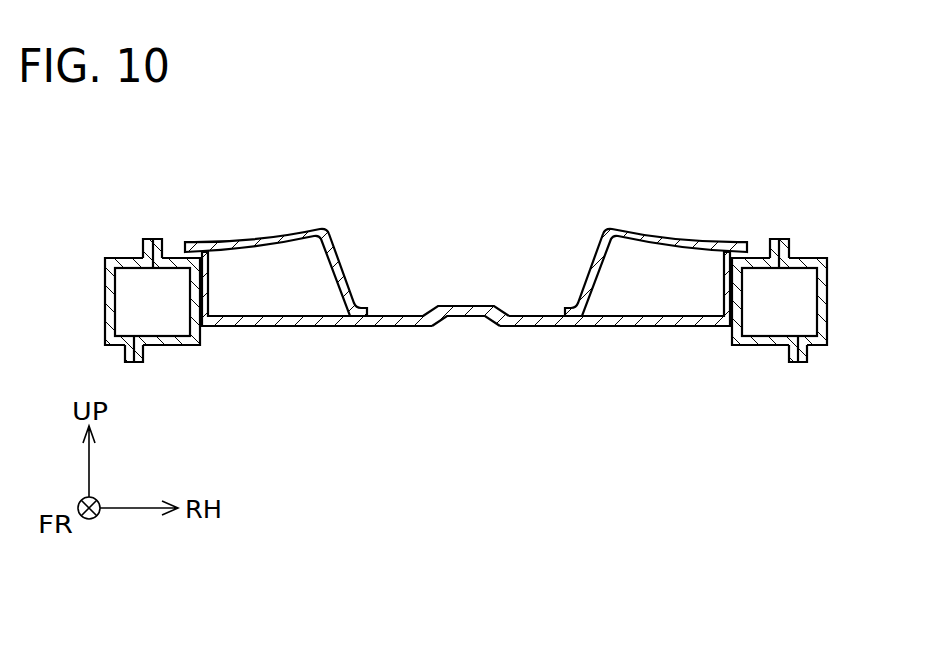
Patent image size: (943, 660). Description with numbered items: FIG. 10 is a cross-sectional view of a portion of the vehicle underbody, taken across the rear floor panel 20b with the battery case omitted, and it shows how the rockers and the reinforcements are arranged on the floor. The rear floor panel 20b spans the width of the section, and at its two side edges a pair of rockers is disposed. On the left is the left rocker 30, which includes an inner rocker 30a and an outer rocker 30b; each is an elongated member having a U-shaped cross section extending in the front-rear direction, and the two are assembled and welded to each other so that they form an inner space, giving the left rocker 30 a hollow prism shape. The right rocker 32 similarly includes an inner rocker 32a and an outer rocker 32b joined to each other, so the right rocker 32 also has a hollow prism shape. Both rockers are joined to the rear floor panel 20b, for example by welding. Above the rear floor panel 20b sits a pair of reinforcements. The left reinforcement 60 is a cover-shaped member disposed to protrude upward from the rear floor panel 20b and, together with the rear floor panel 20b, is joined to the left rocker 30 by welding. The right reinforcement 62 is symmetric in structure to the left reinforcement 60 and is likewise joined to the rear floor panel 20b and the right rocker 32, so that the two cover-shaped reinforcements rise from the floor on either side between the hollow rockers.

The rear floor panel 20b is at (467, 305).
The left rocker 30 is at (150, 244).
The inner rocker 30a is at (167, 257).
The outer rocker 30b is at (119, 268).
The right rocker 32 is at (783, 244).
The inner rocker 32a is at (763, 257).
The outer rocker 32b is at (800, 257).
The left reinforcement 60 is at (245, 243).
The right reinforcement 62 is at (638, 230).